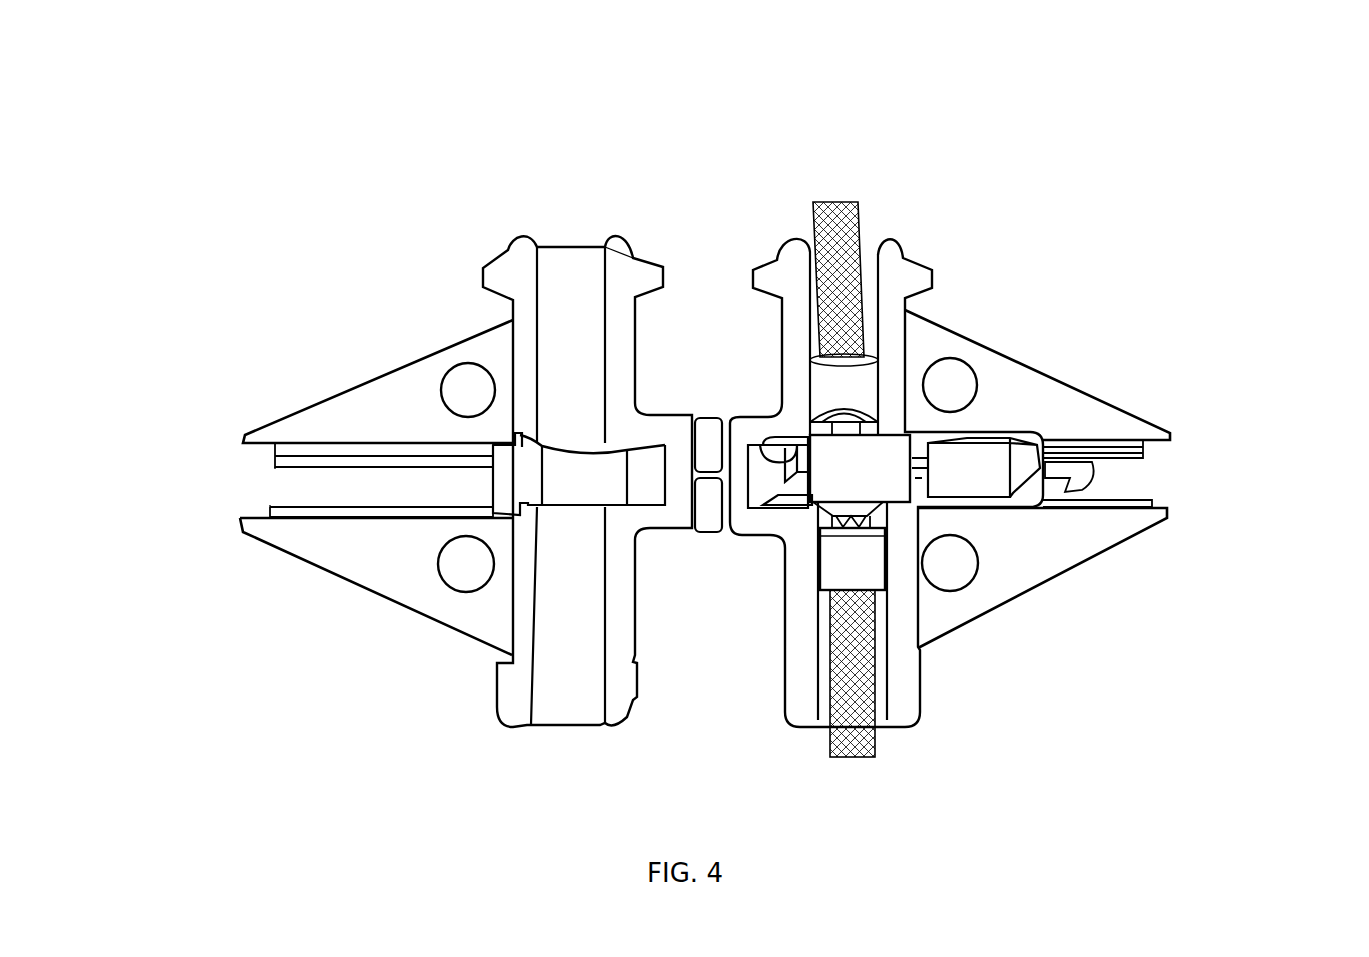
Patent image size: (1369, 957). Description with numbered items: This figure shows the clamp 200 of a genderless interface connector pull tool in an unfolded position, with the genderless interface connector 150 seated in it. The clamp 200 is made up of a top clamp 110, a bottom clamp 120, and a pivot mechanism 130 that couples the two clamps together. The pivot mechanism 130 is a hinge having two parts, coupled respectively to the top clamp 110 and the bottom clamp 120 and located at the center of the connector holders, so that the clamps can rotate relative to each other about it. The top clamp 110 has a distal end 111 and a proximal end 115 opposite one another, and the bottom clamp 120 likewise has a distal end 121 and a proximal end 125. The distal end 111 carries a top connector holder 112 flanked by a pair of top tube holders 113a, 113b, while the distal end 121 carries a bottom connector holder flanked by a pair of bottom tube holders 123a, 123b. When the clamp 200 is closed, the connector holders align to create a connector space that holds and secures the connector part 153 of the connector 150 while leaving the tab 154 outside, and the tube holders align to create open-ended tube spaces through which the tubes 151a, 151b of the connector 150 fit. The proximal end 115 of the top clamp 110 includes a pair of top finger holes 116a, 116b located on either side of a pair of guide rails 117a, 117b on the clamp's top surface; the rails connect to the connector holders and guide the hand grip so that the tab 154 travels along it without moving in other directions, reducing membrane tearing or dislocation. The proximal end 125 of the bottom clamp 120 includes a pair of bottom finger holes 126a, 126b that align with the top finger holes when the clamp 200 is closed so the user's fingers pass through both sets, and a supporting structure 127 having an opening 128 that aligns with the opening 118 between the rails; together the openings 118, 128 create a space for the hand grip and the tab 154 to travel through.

The clamp 200 is at (208, 63).
The top clamp 110 is at (272, 259).
The distal end 111 is at (622, 278).
The top connector holder 112 is at (587, 470).
The top tube holder 113a is at (565, 671).
The top tube holder 113b is at (557, 277).
The proximal end 115 is at (367, 552).
The top finger hole 116a is at (460, 565).
The top finger hole 116b is at (463, 387).
The guide rail 117a is at (273, 518).
The guide rail 117b is at (303, 455).
The opening 118 is at (287, 483).
The bottom clamp 120 is at (1193, 269).
The distal end 121 is at (773, 273).
The bottom tube holder 123a is at (797, 676).
The bottom tube holder 123b is at (887, 270).
The proximal end 125 is at (1052, 548).
The bottom finger hole 126a is at (955, 578).
The bottom finger hole 126b is at (943, 380).
The supporting structure 127 is at (1145, 446).
The opening 128 is at (1133, 485).
The pivot mechanism 130 is at (710, 548).
The genderless interface connector 150 is at (891, 437).
The tube 151a is at (857, 752).
The tube 151b is at (835, 222).
The connector part 153 is at (885, 472).
The tab 154 is at (1043, 442).